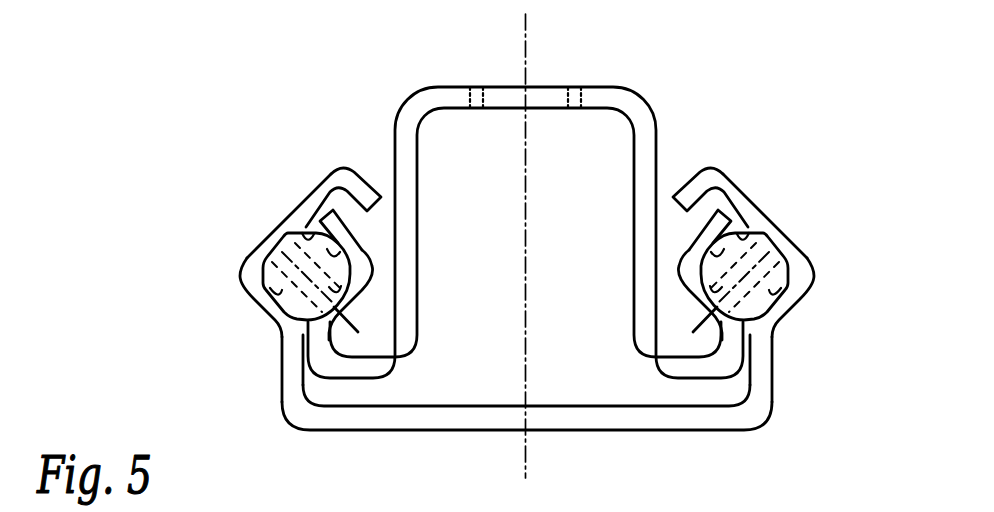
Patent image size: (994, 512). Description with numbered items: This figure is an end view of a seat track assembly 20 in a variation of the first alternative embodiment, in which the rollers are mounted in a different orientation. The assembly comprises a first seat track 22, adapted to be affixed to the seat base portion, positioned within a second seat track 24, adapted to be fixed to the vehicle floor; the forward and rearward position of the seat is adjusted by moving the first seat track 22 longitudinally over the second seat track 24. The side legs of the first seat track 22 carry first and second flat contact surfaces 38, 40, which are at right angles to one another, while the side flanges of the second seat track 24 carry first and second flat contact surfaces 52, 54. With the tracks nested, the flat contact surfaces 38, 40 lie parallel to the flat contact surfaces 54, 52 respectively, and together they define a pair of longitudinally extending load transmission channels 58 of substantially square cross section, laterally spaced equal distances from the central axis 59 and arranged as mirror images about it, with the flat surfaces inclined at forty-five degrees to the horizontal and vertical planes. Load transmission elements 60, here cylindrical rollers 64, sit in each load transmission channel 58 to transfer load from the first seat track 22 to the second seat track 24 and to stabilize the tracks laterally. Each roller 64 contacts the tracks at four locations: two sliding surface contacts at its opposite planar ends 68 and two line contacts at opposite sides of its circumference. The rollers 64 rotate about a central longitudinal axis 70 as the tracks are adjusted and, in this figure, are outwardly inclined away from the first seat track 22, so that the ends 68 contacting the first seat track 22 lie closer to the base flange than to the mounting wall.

The seat track assembly 20 is at (464, 248).
The first seat track 22 is at (609, 80).
The second seat track 24 is at (636, 439).
The first flat contact surfaces 38 is at (338, 285).
The second flat contact surfaces 40 is at (340, 258).
The first flat contact surfaces 52 is at (277, 296).
The second flat contact surfaces 54 is at (308, 236).
The load transmission channels 58 is at (300, 334).
The central axis 59 is at (527, 62).
The load transmission elements 60 is at (254, 269).
The rollers 64 is at (244, 280).
The planar ends 68 is at (282, 242).
The central longitudinal axis 70 is at (262, 226).